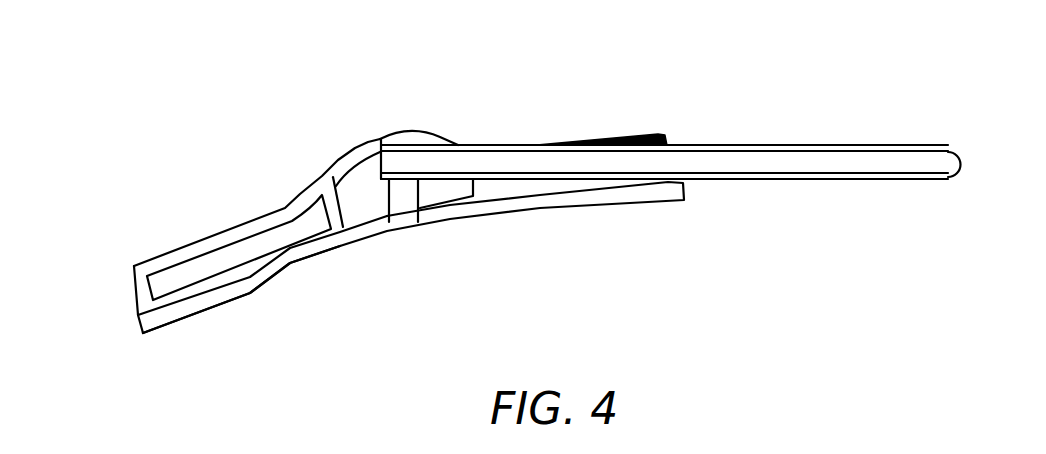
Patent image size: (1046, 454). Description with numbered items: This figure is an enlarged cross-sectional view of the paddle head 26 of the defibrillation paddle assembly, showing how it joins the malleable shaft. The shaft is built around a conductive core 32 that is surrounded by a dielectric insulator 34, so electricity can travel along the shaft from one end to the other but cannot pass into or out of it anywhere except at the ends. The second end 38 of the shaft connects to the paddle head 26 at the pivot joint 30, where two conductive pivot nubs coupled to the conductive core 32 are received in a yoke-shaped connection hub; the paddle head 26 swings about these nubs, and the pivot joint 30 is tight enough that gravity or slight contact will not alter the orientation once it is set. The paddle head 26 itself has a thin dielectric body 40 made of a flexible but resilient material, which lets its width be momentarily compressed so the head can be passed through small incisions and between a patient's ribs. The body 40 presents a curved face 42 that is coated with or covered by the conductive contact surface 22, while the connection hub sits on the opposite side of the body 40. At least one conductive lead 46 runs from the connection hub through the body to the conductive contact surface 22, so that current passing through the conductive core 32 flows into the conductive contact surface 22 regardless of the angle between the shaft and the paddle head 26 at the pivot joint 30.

The conductive contact surface 22 is at (527, 207).
The paddle head 26 is at (215, 163).
The pivot joint 30 is at (450, 115).
The conductive core 32 is at (698, 160).
The dielectric insulator 34 is at (810, 148).
The second end 38 is at (347, 148).
The body 40 is at (130, 301).
The curved face 42 is at (232, 283).
The conductive lead 46 is at (403, 205).